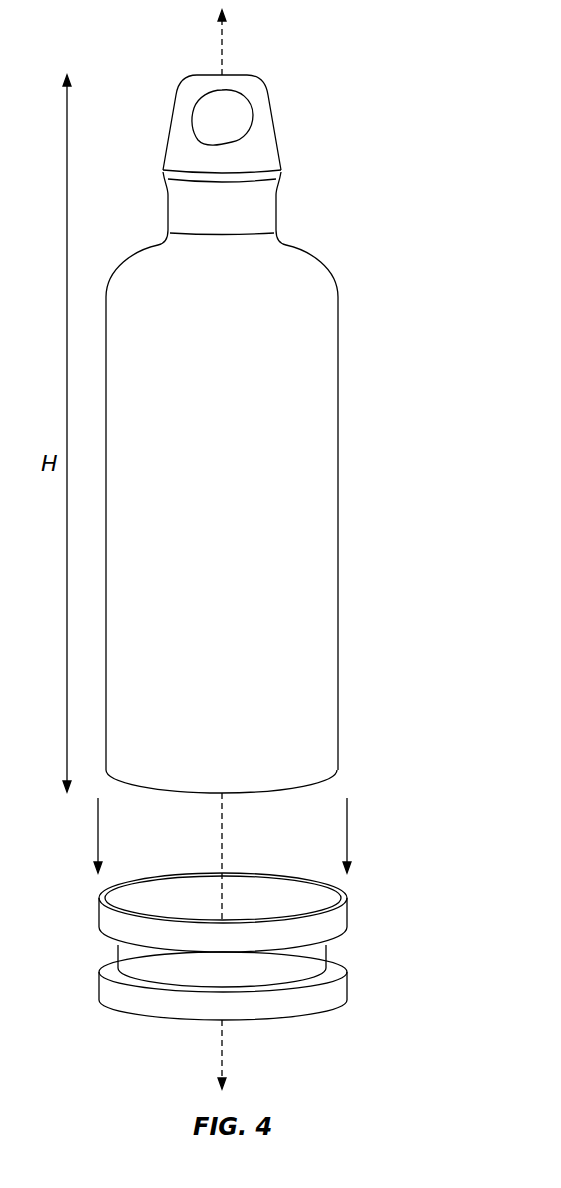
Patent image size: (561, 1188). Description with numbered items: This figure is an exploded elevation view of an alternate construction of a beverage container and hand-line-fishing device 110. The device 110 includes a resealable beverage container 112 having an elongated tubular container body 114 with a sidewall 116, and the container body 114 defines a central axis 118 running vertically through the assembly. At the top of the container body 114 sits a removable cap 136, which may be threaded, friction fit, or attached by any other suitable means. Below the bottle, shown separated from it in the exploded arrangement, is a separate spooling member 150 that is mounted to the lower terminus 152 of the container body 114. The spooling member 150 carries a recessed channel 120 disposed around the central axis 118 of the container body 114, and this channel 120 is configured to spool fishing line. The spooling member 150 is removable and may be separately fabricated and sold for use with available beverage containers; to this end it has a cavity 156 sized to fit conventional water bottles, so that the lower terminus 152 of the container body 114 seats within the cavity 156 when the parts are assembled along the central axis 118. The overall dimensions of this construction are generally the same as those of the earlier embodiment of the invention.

The beverage container and hand-line-fishing device 110 is at (275, 434).
The resealable beverage container 112 is at (308, 243).
The container body 114 is at (267, 545).
The sidewall 116 is at (338, 553).
The central axis 118 is at (223, 58).
The recessed channel 120 is at (327, 960).
The removable cap 136 is at (280, 128).
The spooling member 150 is at (249, 912).
The lower terminus 152 is at (340, 756).
The cavity 156 is at (201, 911).